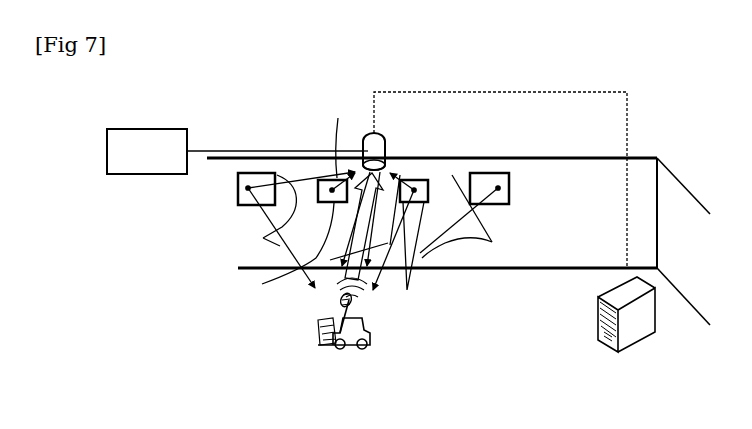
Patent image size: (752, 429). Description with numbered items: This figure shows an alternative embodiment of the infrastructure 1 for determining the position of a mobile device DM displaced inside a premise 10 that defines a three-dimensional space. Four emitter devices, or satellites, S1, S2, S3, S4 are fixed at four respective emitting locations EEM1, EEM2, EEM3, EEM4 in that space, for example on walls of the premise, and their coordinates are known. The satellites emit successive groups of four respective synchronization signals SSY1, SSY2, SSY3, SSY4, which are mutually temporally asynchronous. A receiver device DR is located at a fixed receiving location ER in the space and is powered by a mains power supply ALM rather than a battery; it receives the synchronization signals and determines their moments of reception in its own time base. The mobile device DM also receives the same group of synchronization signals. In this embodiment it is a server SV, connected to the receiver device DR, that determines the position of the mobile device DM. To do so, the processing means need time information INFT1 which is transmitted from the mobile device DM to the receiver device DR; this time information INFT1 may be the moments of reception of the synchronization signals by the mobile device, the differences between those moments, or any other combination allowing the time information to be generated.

The infrastructure 1 is at (697, 52).
The premise 10 is at (644, 156).
The mains power supply ALM is at (147, 151).
The receiving location ER is at (387, 150).
The receiver device DR is at (386, 132).
The emitter device S1 is at (241, 205).
The emitter device S2 is at (331, 203).
The emitter device S3 is at (423, 203).
The emitter device S4 is at (509, 204).
The emitting location EEM1 is at (238, 188).
The emitting location EEM2 is at (345, 166).
The emitting location EEM3 is at (398, 167).
The emitting location EEM4 is at (509, 188).
The synchronization signal SSY1 is at (283, 230).
The synchronization signal SSY2 is at (285, 195).
The synchronization signal SSY3 is at (406, 280).
The synchronization signal SSY4 is at (479, 216).
The time information INFT1 is at (320, 283).
The mobile device DM is at (349, 356).
The server SV is at (637, 348).